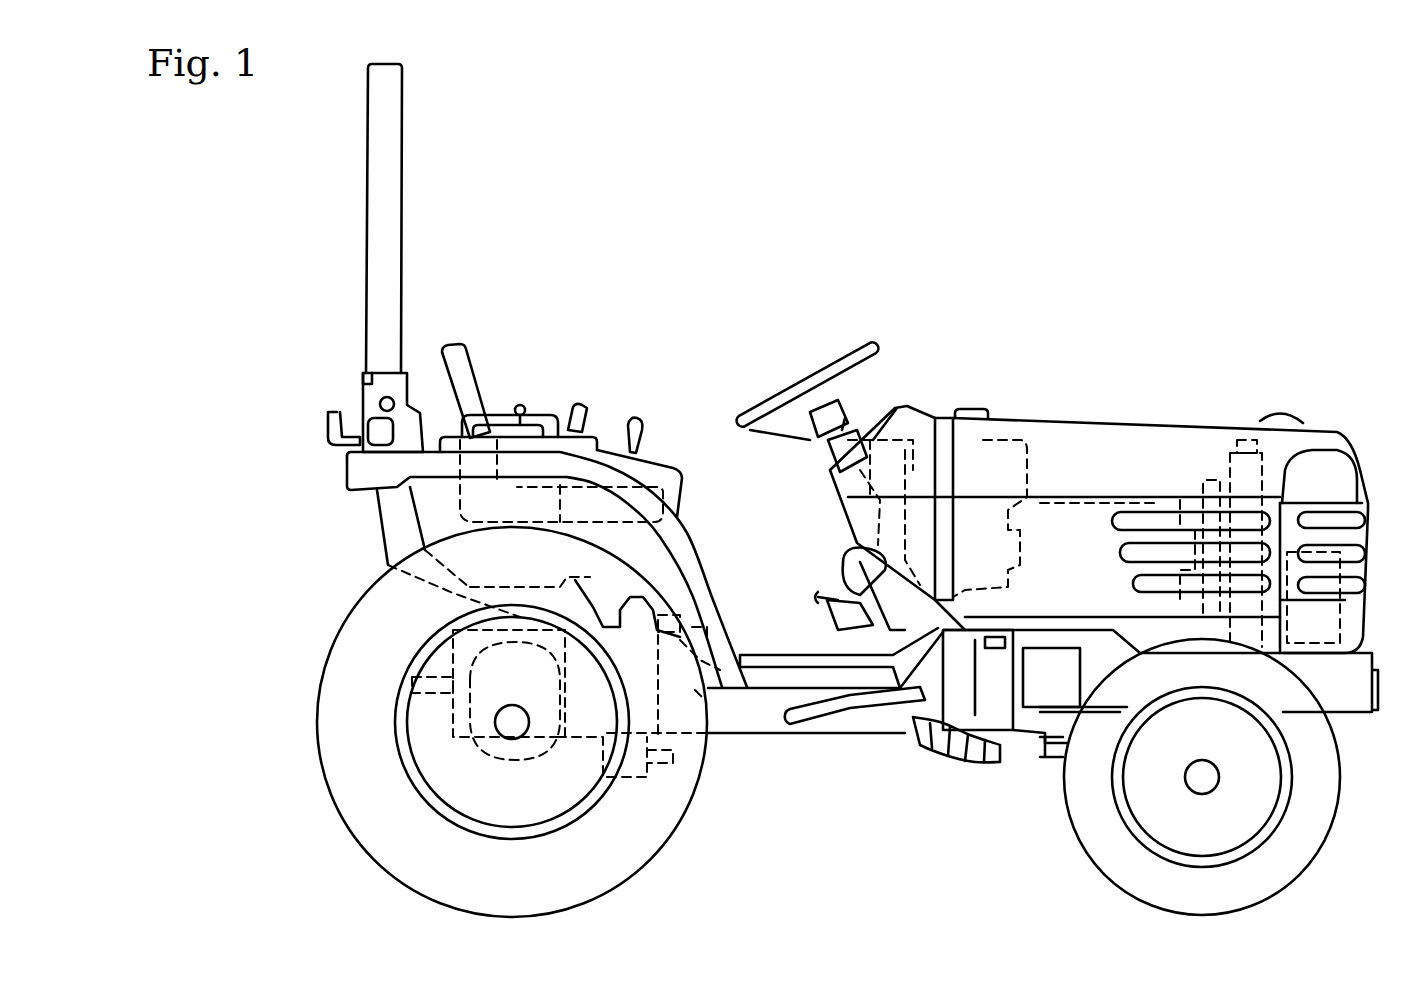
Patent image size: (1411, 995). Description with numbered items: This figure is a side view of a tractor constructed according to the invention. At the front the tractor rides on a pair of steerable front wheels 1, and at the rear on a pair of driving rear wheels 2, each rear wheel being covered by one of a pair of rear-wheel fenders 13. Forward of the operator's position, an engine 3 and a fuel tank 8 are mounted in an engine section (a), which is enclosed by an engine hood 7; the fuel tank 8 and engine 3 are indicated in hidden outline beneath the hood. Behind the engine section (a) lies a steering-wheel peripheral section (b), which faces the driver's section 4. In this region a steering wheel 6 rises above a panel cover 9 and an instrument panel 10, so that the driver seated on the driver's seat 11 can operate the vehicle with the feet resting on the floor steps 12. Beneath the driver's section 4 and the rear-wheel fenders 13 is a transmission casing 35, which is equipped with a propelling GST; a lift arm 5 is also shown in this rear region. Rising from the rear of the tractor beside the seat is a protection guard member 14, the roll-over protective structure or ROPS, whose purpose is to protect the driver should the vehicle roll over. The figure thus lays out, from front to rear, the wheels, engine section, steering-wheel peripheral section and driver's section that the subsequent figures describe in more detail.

The steerable front wheels 1 is at (1308, 842).
The driving rear wheels 2 is at (356, 811).
The engine 3 is at (1090, 470).
The driver's section 4 is at (647, 342).
The lift arm 5 is at (456, 617).
The steering wheel 6 is at (838, 368).
The engine hood 7 is at (1162, 420).
The fuel tank 8 is at (1013, 443).
The panel cover 9 is at (917, 417).
The instrument panel 10 is at (878, 430).
The driver's seat 11 is at (462, 332).
The floor steps 12 is at (780, 653).
The rear-wheel fenders 13 is at (692, 557).
The protection guard member 14 is at (390, 161).
The transmission casing 35 is at (708, 742).
The engine section a is at (1070, 320).
The steering-wheel peripheral section b is at (808, 510).